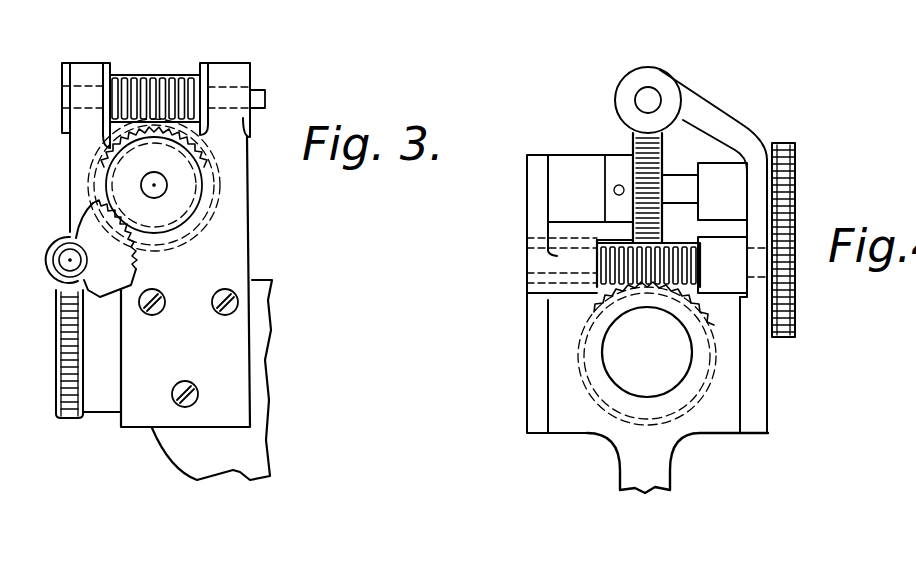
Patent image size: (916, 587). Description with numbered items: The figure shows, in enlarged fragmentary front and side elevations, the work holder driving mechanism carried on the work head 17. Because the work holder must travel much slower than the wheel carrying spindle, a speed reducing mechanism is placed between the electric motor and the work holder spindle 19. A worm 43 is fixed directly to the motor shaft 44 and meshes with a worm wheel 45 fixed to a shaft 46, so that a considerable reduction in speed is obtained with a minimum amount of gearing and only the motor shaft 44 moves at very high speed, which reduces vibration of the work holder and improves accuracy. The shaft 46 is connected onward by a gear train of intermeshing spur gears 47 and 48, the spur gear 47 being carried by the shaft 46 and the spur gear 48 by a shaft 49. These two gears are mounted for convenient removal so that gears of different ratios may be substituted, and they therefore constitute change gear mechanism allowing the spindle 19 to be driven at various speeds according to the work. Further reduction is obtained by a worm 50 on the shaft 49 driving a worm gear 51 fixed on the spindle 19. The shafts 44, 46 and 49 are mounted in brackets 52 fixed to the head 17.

In FIG. 3, the work head 17 is at (240, 450).
In FIG. 4, the work head 17 is at (655, 460).
In FIG. 4, the spindle 19 is at (627, 373).
In FIG. 3, the worm 43 is at (147, 80).
In FIG. 3, the motor shaft 44 is at (253, 100).
In FIG. 4, the motor shaft 44 is at (652, 100).
In FIG. 3, the worm wheel 45 is at (107, 147).
In FIG. 4, the worm wheel 45 is at (637, 146).
In FIG. 3, the shaft 46 is at (155, 184).
In FIG. 4, the shaft 46 is at (680, 187).
In FIG. 3, the spur gear 47 is at (143, 232).
In FIG. 4, the spur gear 47 is at (774, 160).
In FIG. 3, the spur gear 48 is at (87, 203).
In FIG. 4, the spur gear 48 is at (783, 283).
In FIG. 3, the shaft 49 is at (57, 255).
In FIG. 4, the shaft 49 is at (535, 280).
In FIG. 4, the worm 50 is at (607, 283).
In FIG. 3, the worm gear 51 is at (70, 418).
In FIG. 4, the worm gear 51 is at (597, 333).
In FIG. 3, the brackets 52 is at (220, 260).
In FIG. 4, the brackets 52 is at (537, 417).